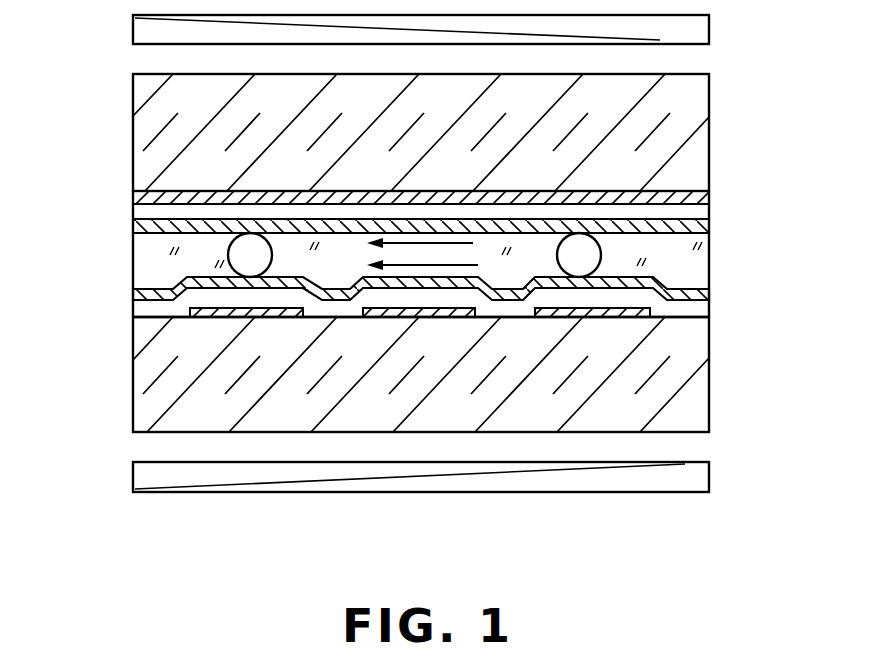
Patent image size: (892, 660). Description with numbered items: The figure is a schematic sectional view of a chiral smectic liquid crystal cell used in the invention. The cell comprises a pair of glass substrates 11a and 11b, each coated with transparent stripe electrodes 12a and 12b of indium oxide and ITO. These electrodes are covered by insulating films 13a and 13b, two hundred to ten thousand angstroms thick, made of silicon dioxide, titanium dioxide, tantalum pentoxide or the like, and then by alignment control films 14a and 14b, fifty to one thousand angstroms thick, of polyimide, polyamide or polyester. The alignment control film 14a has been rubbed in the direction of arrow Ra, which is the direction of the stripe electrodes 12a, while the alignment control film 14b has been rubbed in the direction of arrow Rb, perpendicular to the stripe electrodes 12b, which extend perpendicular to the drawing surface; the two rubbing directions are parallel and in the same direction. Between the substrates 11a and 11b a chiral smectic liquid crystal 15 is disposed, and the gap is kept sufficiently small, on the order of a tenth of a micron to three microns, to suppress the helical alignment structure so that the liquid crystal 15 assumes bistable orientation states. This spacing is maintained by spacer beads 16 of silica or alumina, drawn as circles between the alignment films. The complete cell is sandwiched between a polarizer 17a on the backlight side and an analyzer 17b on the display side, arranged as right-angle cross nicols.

The substrate 11a is at (710, 122).
The substrate 11b is at (710, 370).
The transparent stripe electrodes 12a is at (710, 195).
The transparent stripe electrodes 12b is at (190, 312).
The insulating film 13a is at (710, 212).
The insulating film 13b is at (710, 310).
The alignment control film 14a is at (710, 226).
The alignment control film 14b is at (710, 294).
The chiral smectic liquid crystal 15 is at (700, 265).
The spacer beads 16 is at (229, 249).
The polarizer 17a is at (133, 33).
The analyzer 17b is at (133, 478).